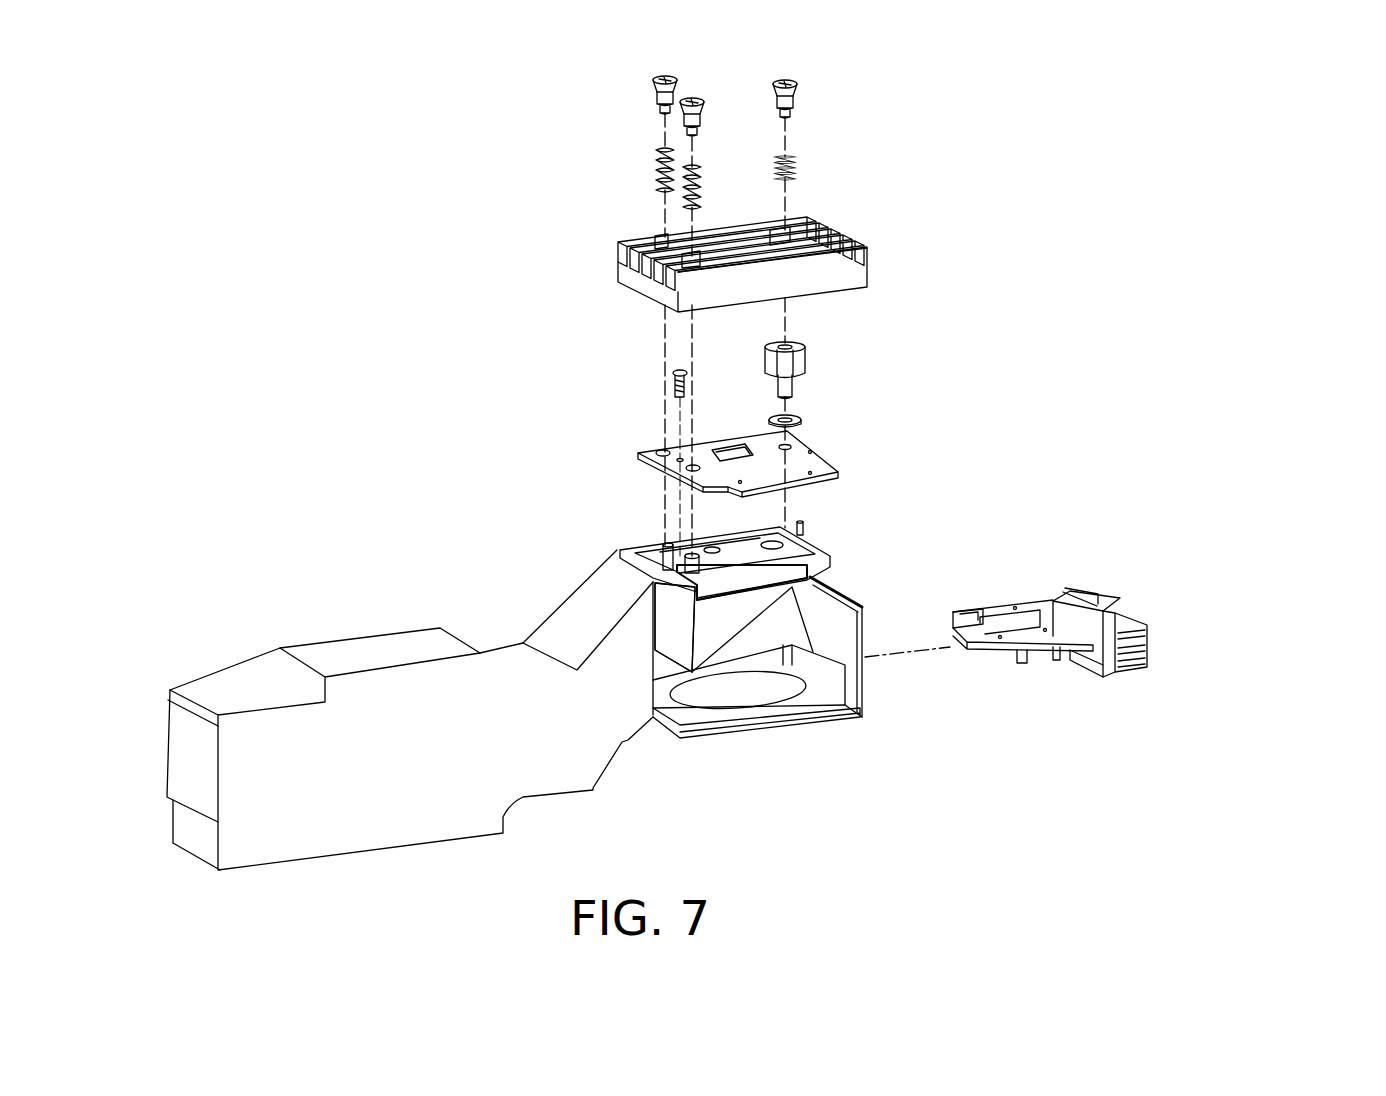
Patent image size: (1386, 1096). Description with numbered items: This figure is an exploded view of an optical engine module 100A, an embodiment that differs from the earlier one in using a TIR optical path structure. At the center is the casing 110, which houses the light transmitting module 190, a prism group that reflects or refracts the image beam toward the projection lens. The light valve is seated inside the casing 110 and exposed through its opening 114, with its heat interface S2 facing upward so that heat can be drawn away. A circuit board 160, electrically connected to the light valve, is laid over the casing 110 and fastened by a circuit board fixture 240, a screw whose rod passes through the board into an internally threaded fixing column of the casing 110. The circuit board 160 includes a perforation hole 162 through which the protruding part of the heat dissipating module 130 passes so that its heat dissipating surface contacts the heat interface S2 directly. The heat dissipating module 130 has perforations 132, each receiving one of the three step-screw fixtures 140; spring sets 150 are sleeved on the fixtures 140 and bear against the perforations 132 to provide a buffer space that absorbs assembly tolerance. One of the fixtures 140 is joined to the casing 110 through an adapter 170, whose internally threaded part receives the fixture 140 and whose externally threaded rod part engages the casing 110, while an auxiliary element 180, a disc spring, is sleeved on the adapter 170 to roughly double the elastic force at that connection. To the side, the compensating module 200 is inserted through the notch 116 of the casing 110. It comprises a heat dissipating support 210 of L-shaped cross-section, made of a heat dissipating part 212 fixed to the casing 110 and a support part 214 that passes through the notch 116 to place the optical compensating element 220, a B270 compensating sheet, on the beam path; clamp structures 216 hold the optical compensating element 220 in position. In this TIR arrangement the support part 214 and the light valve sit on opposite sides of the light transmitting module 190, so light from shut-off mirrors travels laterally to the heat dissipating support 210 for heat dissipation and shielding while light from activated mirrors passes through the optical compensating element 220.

The optical engine module 100A is at (360, 412).
The casing 110 is at (515, 657).
The opening 114 is at (727, 551).
The notch 116 is at (818, 665).
The heat dissipating module 130 is at (848, 267).
The perforations 132 is at (745, 226).
The fixtures 140 is at (785, 78).
The spring sets 150 is at (780, 165).
The circuit board 160 is at (817, 467).
The perforation hole 162 is at (722, 453).
The adapter 170 is at (800, 360).
The auxiliary element 180 is at (800, 420).
The light transmitting module 190 is at (703, 622).
The compensating module 200 is at (1207, 583).
The heat dissipating support 210 is at (1215, 737).
The heat dissipating part 212 is at (1113, 603).
The support part 214 is at (1037, 610).
The clamp structures 216 is at (1057, 660).
The optical compensating element 220 is at (988, 647).
The circuit board fixture 240 is at (673, 373).
The heat interface S2 is at (668, 548).